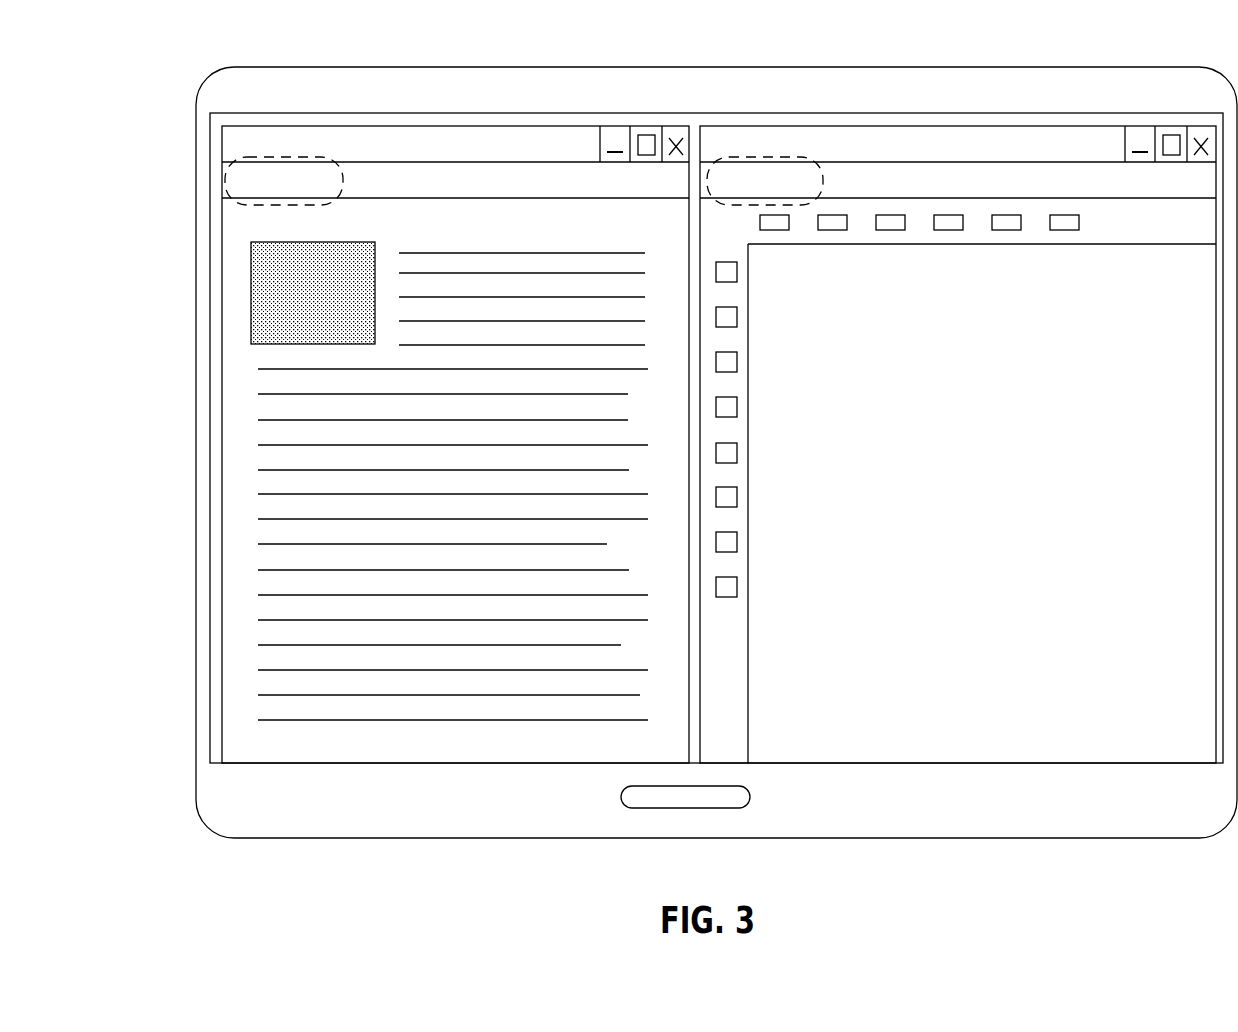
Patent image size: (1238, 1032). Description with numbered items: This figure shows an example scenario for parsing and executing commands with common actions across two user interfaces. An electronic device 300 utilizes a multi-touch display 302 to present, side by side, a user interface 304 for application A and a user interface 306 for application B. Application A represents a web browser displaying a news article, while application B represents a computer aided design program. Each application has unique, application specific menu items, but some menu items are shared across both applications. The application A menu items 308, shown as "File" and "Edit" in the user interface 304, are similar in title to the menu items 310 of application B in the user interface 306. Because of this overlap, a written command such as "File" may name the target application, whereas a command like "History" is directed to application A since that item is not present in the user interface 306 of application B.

The electronic device 300 is at (1023, 67).
The multi-touch display 302 is at (513, 112).
The user interface 304 is at (397, 138).
The user interface 306 is at (900, 138).
The menu items 308 is at (265, 205).
The menu items 310 is at (797, 205).